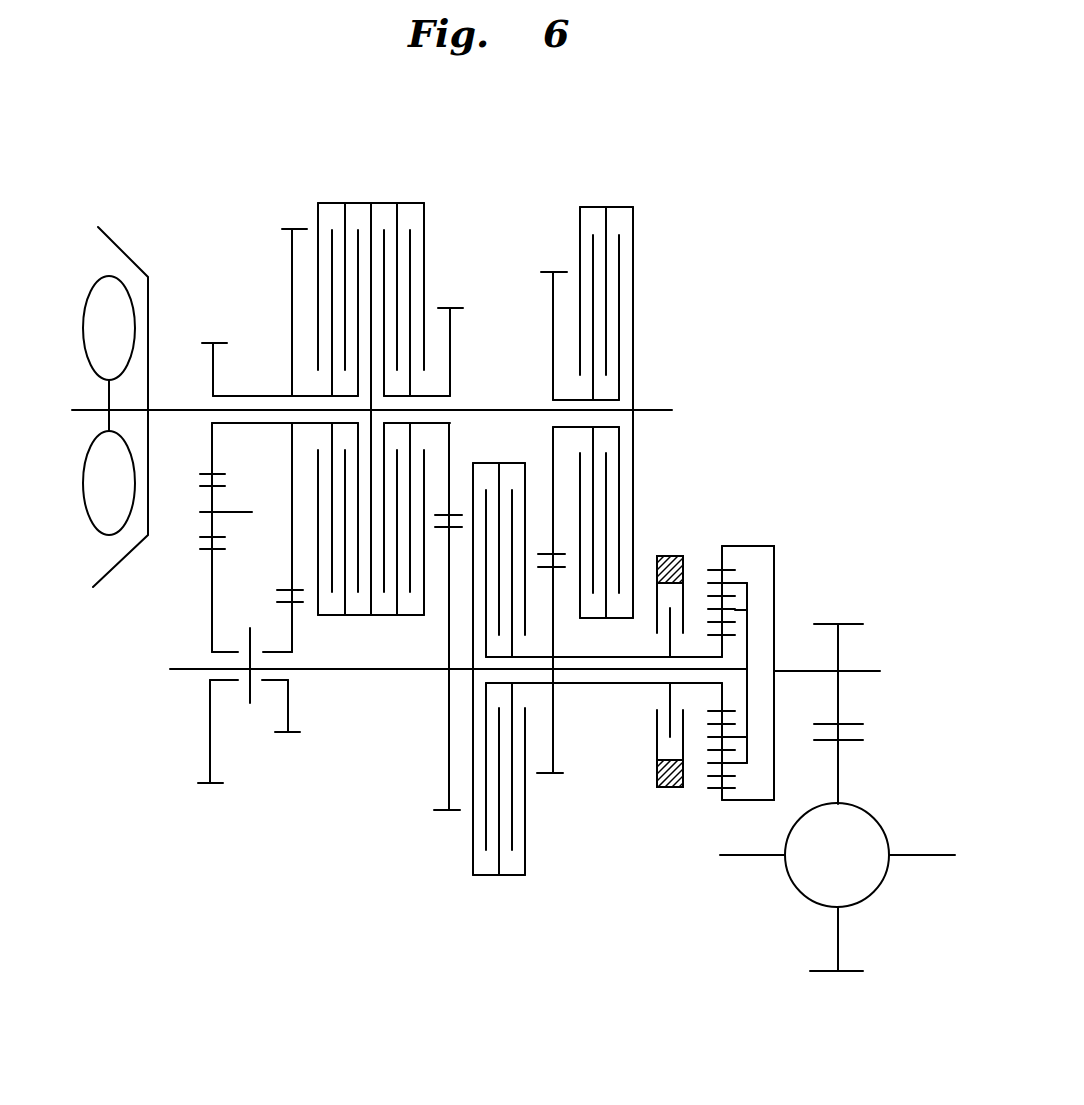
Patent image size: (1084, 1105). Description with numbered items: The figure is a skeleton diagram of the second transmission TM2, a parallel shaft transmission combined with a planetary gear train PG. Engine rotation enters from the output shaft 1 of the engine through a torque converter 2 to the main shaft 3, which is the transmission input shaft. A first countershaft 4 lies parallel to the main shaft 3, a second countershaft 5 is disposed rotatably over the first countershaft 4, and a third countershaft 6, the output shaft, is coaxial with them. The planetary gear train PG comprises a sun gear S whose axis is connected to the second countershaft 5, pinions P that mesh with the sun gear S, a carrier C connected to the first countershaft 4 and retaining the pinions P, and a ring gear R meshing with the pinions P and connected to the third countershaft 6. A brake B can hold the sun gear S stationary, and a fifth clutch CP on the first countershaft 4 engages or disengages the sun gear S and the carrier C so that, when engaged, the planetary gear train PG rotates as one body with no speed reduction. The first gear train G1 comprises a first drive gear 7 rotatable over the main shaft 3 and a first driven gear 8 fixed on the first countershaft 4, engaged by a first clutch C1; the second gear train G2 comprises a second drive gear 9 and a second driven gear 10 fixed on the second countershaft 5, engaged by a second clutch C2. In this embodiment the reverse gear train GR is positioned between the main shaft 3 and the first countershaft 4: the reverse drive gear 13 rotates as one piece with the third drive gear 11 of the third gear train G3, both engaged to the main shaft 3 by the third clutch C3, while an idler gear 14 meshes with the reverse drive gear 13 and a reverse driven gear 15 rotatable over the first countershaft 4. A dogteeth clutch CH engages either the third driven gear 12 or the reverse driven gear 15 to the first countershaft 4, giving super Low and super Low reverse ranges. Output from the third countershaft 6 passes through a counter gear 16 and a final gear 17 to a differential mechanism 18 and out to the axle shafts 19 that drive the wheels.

The output shaft of an engine 1 is at (72, 412).
The torque converter 2 is at (94, 241).
The main shaft 3 is at (652, 410).
The first countershaft 4 is at (355, 671).
The second countershaft 5 is at (597, 684).
The third countershaft 6 is at (862, 671).
The first drive gear 7 is at (458, 308).
The first driven gear 8 is at (440, 812).
The second drive gear 9 is at (552, 272).
The second driven gear 10 is at (555, 775).
The third drive gear 11 is at (285, 229).
The third driven gear 12 is at (290, 734).
The reverse drive gear 13 is at (220, 343).
The idler gear 14 is at (226, 481).
The reverse driven gear 15 is at (200, 784).
The counter gear 16 is at (852, 624).
The final gear 17 is at (856, 973).
The differential mechanism 18 is at (884, 814).
The axle shafts 19 is at (931, 858).
The reverse gear train GR is at (212, 330).
The first gear train G1 is at (451, 286).
The second gear train G2 is at (553, 253).
The third gear train G3 is at (292, 205).
The first clutch C1 is at (400, 200).
The second clutch C2 is at (607, 203).
The third clutch C3 is at (348, 200).
The fifth clutch CP is at (493, 880).
The brake B is at (672, 552).
The ring gear R is at (713, 556).
The pinions P is at (735, 568).
The sun gear S is at (716, 633).
The carrier C is at (750, 643).
The planetary gear train PG is at (712, 808).
The dogteeth clutch CH is at (247, 724).
The second transmission TM2 is at (728, 192).